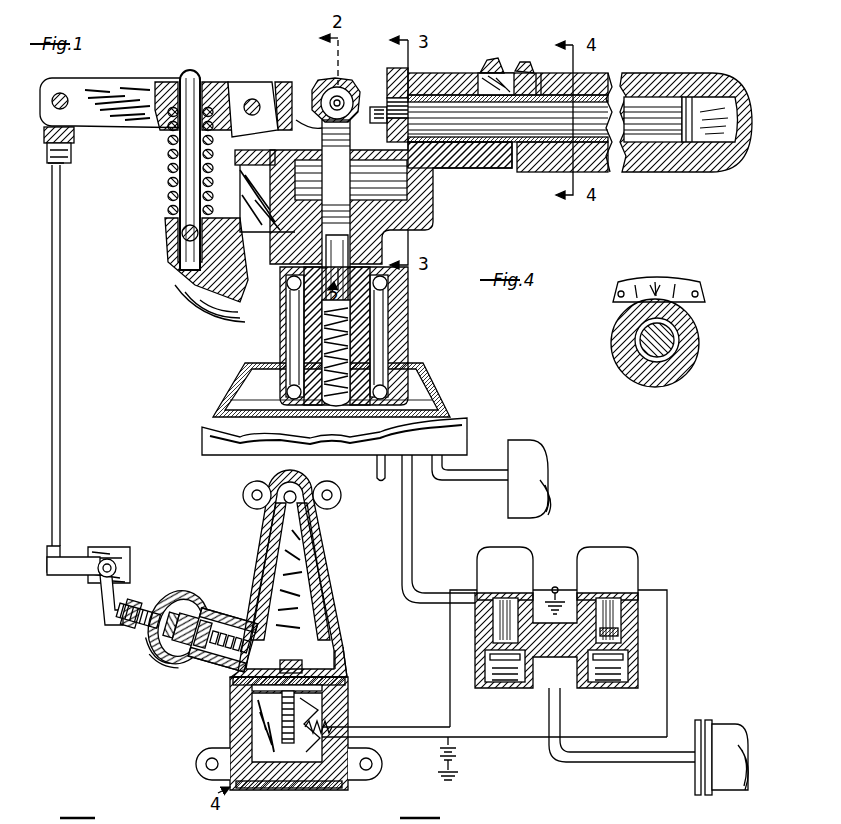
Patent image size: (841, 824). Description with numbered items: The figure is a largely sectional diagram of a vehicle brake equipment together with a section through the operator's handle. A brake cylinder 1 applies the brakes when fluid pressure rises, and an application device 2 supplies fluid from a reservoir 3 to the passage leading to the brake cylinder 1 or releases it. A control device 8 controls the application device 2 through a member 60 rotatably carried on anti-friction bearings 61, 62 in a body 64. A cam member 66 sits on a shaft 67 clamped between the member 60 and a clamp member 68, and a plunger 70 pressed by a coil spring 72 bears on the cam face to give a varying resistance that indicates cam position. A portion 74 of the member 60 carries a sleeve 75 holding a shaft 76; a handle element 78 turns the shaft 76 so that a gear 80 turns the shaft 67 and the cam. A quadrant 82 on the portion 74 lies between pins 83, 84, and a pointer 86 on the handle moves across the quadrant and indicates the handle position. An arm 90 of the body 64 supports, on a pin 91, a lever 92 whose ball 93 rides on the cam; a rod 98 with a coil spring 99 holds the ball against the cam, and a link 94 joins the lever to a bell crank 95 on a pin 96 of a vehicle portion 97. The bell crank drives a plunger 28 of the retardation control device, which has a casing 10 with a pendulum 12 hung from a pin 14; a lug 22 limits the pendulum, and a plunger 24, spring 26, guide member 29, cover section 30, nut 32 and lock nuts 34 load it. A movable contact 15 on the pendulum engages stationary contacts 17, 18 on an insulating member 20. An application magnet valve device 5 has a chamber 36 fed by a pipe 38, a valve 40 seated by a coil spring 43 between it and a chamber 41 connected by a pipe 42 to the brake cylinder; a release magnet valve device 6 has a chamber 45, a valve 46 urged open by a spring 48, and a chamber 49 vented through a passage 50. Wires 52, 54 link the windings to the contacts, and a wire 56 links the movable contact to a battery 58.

In FIG. 1, the brake cylinder 1 is at (728, 790).
In FIG. 1, the application device 2 is at (470, 420).
In FIG. 1, the reservoir 3 is at (522, 463).
In FIG. 1, the application magnet valve device 5 is at (490, 552).
In FIG. 1, the release magnet valve device 6 is at (600, 552).
In FIG. 1, the control device 8 is at (433, 212).
In FIG. 1, the casing 10 is at (337, 573).
In FIG. 1, the pendulum 12 is at (305, 552).
In FIG. 1, the pin 14 is at (262, 517).
In FIG. 1, the movable contact 15 is at (285, 745).
In FIG. 1, the stationary contact 17 is at (305, 700).
In FIG. 1, the stationary contact 18 is at (306, 755).
In FIG. 1, the insulating member 20 is at (240, 709).
In FIG. 1, the lug 22 is at (346, 650).
In FIG. 1, the plunger 24 is at (222, 585).
In FIG. 1, the spring 26 is at (188, 595).
In FIG. 1, the plunger 28 is at (160, 640).
In FIG. 1, the guide member 29 is at (172, 652).
In FIG. 1, the casing cover section 30 is at (154, 588).
In FIG. 1, the nut 32 is at (152, 622).
In FIG. 1, the lock nuts 34 is at (118, 608).
In FIG. 1, the chamber 36 is at (493, 608).
In FIG. 1, the pipe 38 is at (412, 539).
In FIG. 1, the valve 40 is at (488, 665).
In FIG. 1, the chamber 41 is at (518, 680).
In FIG. 1, the pipe 42 is at (560, 690).
In FIG. 1, the coil spring 43 is at (503, 675).
In FIG. 1, the chamber 45 is at (604, 658).
In FIG. 1, the valve 46 is at (606, 642).
In FIG. 1, the spring 48 is at (610, 690).
In FIG. 1, the chamber 49 is at (616, 602).
In FIG. 1, the passage 50 is at (612, 622).
In FIG. 1, the wire 52 is at (452, 663).
In FIG. 1, the wire 54 is at (404, 753).
In FIG. 1, the wire 56 is at (425, 724).
In FIG. 1, the battery 58 is at (458, 761).
In FIG. 1, the member 60 is at (356, 320).
In FIG. 1, the anti-friction bearing 61 is at (405, 300).
In FIG. 1, the anti-friction bearing 62 is at (422, 386).
In FIG. 1, the body 64 is at (396, 340).
In FIG. 1, the cam member 66 is at (292, 160).
In FIG. 1, the shaft 67 is at (363, 110).
In FIG. 1, the clamp member 68 is at (282, 150).
In FIG. 1, the plunger 70 is at (340, 252).
In FIG. 1, the coil spring 72 is at (322, 350).
In FIG. 1, the portion 74 is at (476, 78).
In FIG. 1, the sleeve 75 is at (450, 83).
In FIG. 4, the sleeve 75 is at (612, 334).
In FIG. 1, the shaft 76 is at (598, 118).
In FIG. 4, the shaft 76 is at (672, 370).
In FIG. 1, the handle element 78 is at (652, 85).
In FIG. 4, the handle element 78 is at (700, 338).
In FIG. 1, the gear 80 is at (386, 90).
In FIG. 1, the quadrant 82 is at (504, 62).
In FIG. 4, the quadrant 82 is at (640, 288).
In FIG. 4, the pin 83 is at (620, 290).
In FIG. 4, the pin 84 is at (702, 294).
In FIG. 1, the pointer 86 is at (531, 60).
In FIG. 4, the pointer 86 is at (658, 292).
In FIG. 1, the arm 90 is at (178, 268).
In FIG. 1, the pin 91 is at (250, 98).
In FIG. 1, the lever 92 is at (133, 82).
In FIG. 1, the ball 93 is at (322, 85).
In FIG. 1, the link 94 is at (62, 352).
In FIG. 1, the bell crank 95 is at (70, 558).
In FIG. 1, the pin 96 is at (109, 560).
In FIG. 1, the portion of the vehicle structure 97 is at (130, 547).
In FIG. 1, the rod 98 is at (190, 184).
In FIG. 1, the coil spring 99 is at (168, 163).